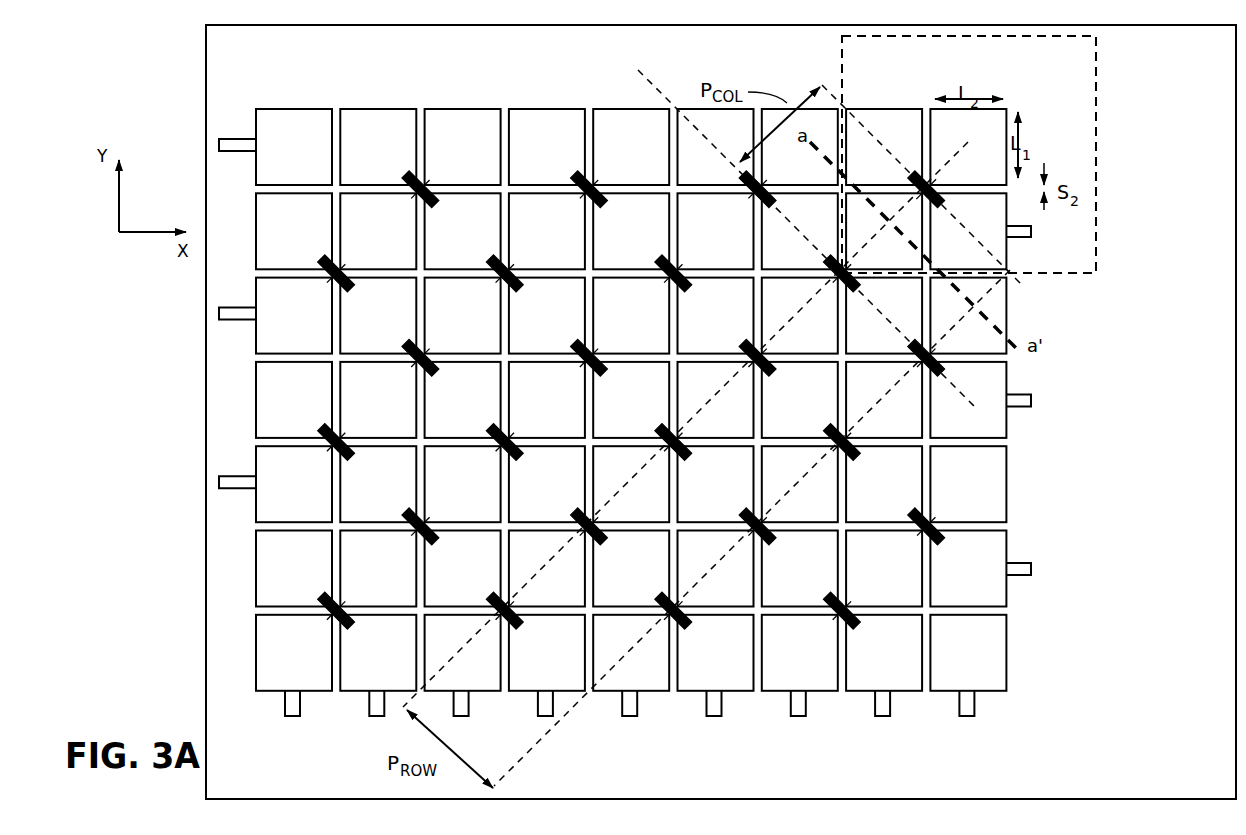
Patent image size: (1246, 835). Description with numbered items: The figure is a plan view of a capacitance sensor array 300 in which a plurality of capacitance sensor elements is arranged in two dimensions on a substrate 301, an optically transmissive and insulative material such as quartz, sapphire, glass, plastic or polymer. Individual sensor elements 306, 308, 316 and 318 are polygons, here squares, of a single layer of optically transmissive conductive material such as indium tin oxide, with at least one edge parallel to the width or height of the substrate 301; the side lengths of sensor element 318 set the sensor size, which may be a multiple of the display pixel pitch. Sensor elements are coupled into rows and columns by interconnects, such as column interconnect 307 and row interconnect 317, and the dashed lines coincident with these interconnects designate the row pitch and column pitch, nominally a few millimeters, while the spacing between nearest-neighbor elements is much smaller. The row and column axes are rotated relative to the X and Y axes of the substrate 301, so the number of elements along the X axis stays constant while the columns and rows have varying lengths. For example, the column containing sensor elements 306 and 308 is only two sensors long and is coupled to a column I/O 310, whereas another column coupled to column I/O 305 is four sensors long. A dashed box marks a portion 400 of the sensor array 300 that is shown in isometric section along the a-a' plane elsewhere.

The sensor array 300 is at (1140, 198).
The substrate 301 is at (206, 110).
The column I/O 305 is at (1020, 412).
The sensor element 306 is at (971, 256).
The column interconnect 307 is at (917, 174).
The sensor element 308 is at (886, 176).
The column I/O 310 is at (1020, 244).
The sensor element 316 is at (881, 235).
The row interconnect 317 is at (942, 172).
The sensor element 318 is at (981, 140).
The portion of the sensor array 400 is at (1097, 97).